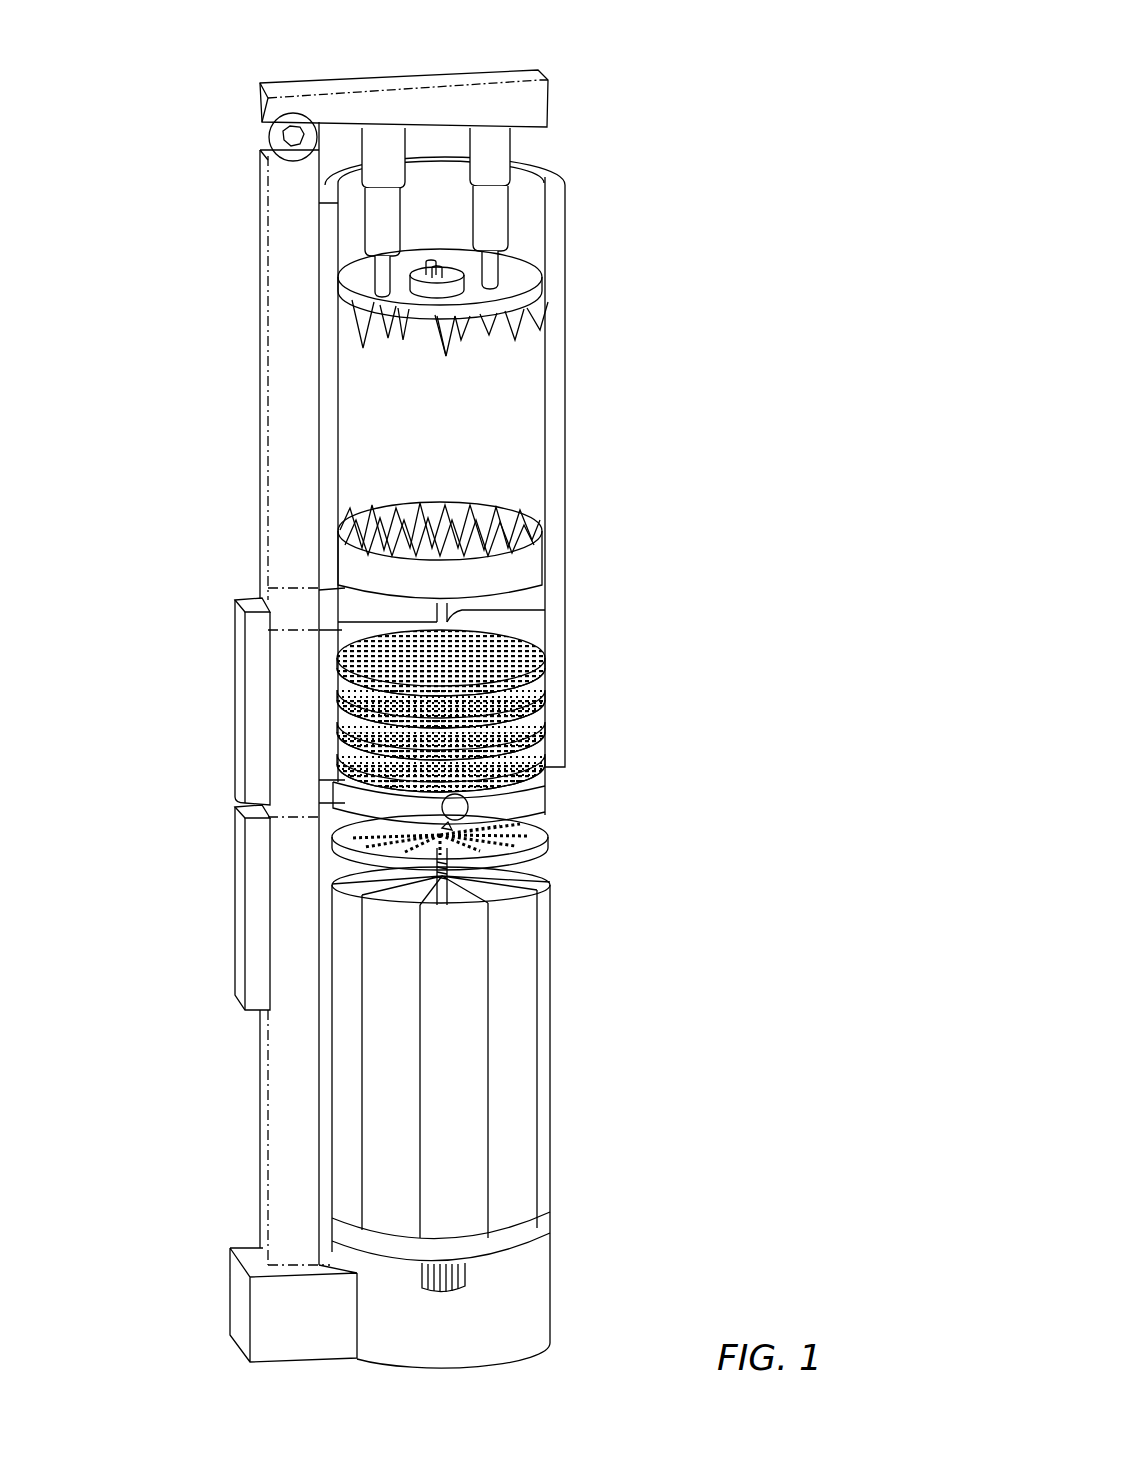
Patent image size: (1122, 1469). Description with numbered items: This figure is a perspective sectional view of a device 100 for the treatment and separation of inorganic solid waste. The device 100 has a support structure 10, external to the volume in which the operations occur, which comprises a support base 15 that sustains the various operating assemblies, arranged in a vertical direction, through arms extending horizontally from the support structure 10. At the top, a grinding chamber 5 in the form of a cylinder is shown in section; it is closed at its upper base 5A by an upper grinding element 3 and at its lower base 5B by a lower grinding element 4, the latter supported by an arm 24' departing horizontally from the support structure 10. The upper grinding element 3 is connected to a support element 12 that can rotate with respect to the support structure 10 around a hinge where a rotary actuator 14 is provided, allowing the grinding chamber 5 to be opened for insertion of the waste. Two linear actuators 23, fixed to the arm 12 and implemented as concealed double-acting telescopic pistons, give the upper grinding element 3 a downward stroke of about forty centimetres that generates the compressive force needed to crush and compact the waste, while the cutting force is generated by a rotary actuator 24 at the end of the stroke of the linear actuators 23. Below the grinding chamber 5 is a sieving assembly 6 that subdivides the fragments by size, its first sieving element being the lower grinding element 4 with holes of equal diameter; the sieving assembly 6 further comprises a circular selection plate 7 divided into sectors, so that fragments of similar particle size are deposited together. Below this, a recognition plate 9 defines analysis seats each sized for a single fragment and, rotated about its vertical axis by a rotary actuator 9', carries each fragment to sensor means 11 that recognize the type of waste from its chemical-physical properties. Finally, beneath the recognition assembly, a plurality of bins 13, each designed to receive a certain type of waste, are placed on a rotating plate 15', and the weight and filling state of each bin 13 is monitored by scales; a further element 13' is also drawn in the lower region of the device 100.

The device for the treatment and separation of solid waste 100 is at (652, 159).
The support element 12 is at (493, 110).
The rotary actuator 14 is at (291, 137).
The support structure 10 is at (283, 330).
The lower base 5B is at (327, 563).
The arm 24' is at (246, 708).
The sensor means 11 is at (343, 872).
The grinding chamber 5 is at (518, 435).
The upper base 5A is at (552, 185).
The linear actuators 23 is at (383, 155).
The upper grinding element 3 is at (520, 295).
The lower grinding element 4 is at (518, 577).
The rotary actuator 24 is at (544, 627).
The sieving assembly 6 is at (572, 655).
The selection plate 7 is at (512, 800).
The recognition plate 9 is at (492, 855).
The rotary actuator 9' is at (545, 902).
The bins 13 is at (499, 1052).
The support base 15 is at (484, 1126).
The rotating plate 15' is at (498, 1207).
The coupling 13' is at (542, 1265).